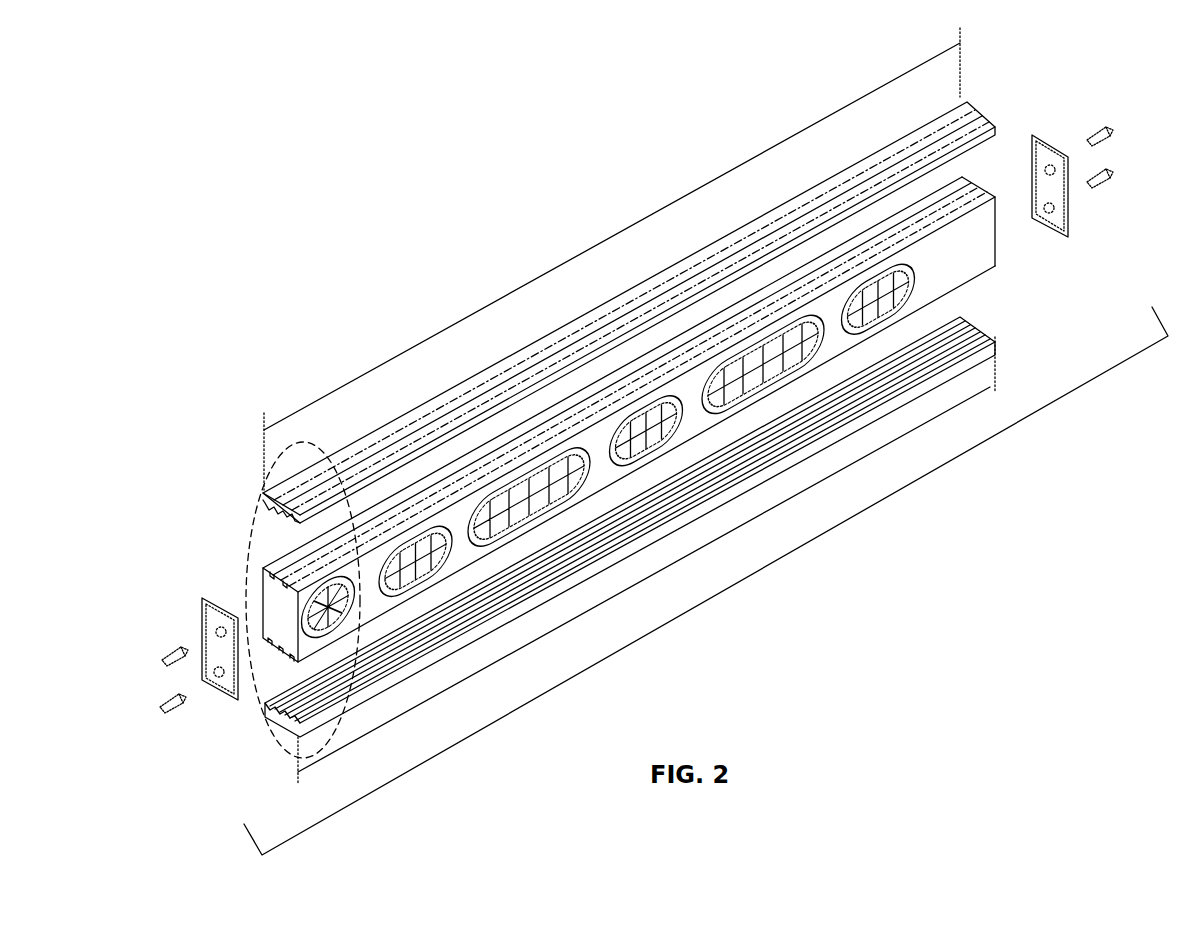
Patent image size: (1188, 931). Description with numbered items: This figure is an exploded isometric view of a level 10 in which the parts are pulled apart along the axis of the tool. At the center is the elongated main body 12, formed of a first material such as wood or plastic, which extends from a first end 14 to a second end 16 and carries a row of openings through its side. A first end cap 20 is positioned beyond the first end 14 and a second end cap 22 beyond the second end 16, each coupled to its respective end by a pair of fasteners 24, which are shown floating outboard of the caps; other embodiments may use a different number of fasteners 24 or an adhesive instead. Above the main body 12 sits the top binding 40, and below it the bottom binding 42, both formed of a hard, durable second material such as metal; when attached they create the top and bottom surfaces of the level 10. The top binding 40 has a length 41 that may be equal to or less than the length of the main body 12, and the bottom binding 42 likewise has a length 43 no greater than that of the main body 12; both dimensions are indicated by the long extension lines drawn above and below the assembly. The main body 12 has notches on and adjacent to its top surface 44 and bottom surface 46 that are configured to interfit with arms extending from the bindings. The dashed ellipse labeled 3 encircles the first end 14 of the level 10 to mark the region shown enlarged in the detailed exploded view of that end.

The level 10 is at (1000, 568).
The main body 12 is at (980, 252).
The first end 14 is at (255, 565).
The second end 16 is at (997, 176).
The first end cap 20 is at (215, 647).
The second end cap 22 is at (1043, 158).
The fasteners 24 is at (1113, 128).
The section line for enlarged view 3 is at (262, 492).
The top binding 40 is at (457, 387).
The length of main binding wall 41 is at (552, 268).
The bottom binding 42 is at (573, 582).
The length of bottom binding 43 is at (690, 555).
The top surface of main body 44 is at (913, 215).
The bottom surface of main body 46 is at (755, 398).